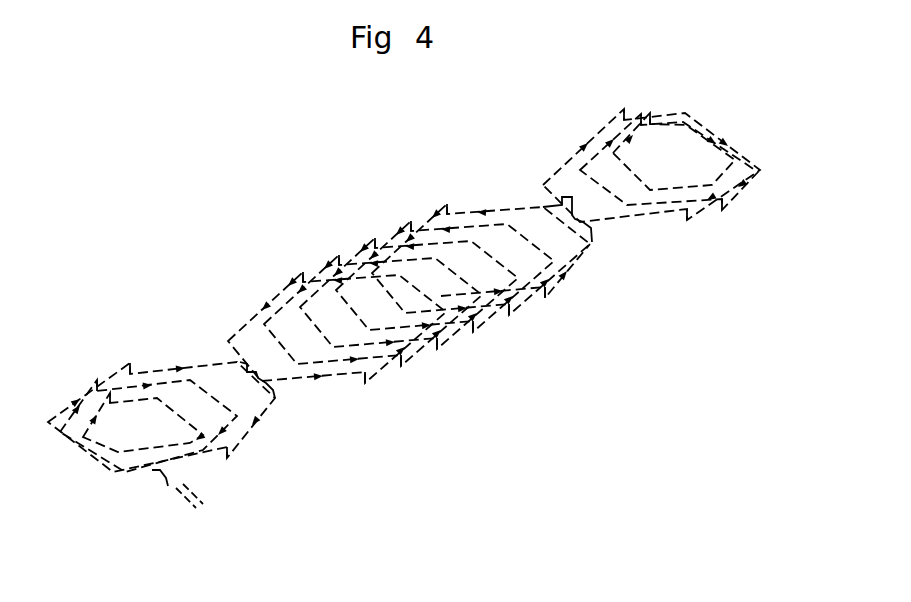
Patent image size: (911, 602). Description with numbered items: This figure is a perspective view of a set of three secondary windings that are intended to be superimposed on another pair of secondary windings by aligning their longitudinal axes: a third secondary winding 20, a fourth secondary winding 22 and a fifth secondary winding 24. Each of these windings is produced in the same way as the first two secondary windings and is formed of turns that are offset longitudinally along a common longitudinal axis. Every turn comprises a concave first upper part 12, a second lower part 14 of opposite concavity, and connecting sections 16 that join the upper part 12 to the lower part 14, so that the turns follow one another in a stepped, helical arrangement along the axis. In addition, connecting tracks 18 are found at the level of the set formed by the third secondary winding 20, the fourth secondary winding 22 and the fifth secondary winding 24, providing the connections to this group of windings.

The first upper part 12 is at (110, 382).
The second lower part 14 is at (145, 390).
The connecting sections 16 is at (238, 446).
The connecting tracks 18 is at (202, 550).
The third secondary winding 20 is at (270, 477).
The fourth secondary winding 22 is at (543, 364).
The fifth secondary winding 24 is at (760, 246).